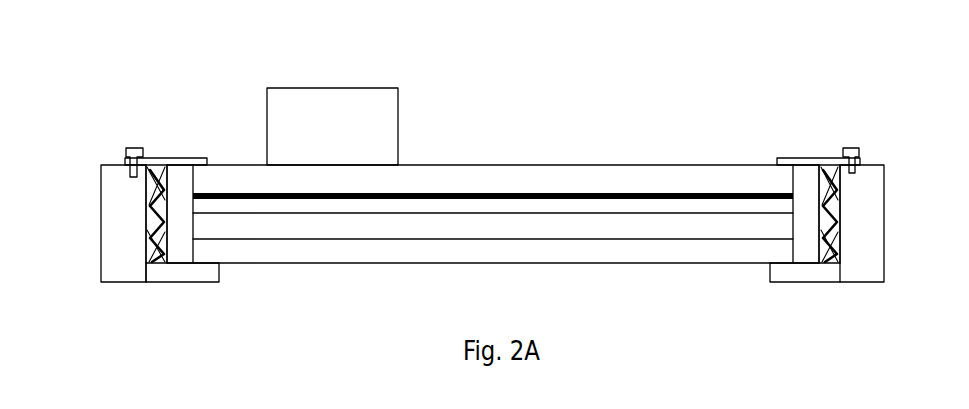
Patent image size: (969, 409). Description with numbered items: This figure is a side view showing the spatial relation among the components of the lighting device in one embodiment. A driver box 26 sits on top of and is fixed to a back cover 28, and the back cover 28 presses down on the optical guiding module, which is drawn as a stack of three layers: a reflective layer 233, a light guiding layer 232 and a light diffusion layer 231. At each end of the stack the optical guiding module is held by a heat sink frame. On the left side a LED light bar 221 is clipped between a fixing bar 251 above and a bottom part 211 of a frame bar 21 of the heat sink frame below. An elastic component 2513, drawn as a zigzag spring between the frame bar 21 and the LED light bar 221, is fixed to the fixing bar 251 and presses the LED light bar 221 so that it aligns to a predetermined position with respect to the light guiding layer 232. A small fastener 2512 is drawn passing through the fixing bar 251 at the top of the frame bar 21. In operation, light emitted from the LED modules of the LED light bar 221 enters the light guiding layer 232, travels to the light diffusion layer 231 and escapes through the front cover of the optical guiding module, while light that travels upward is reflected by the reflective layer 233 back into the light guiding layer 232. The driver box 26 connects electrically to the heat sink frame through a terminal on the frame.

The frame bar 21 is at (122, 228).
The bottom part 211 is at (172, 283).
The LED light bar 221 is at (185, 253).
The light diffusion layer 231 is at (337, 252).
The light guiding layer 232 is at (460, 225).
The reflective layer 233 is at (578, 209).
The fixing bar 251 is at (183, 160).
The fastening screw 2512 is at (135, 146).
The elastic component 2513 is at (160, 252).
The driver box 26 is at (380, 112).
The back cover 28 is at (568, 178).